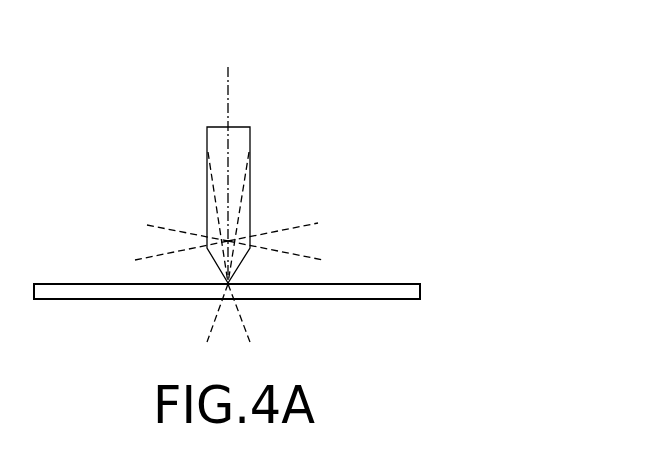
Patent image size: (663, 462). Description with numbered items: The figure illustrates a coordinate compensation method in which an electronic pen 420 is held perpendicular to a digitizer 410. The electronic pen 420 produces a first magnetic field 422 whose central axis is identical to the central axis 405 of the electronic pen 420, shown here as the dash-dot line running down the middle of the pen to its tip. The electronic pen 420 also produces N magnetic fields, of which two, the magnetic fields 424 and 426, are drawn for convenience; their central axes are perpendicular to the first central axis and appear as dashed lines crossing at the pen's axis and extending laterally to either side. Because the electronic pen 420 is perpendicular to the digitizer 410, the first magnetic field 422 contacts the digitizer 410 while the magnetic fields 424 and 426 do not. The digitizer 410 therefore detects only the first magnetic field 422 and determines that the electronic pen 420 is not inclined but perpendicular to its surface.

The central axis 405 is at (228, 67).
The electronic pen 420 is at (250, 127).
The magnetic field 426 is at (142, 220).
The magnetic field 424 is at (315, 220).
The digitizer 410 is at (421, 290).
The first magnetic field 422 is at (209, 328).